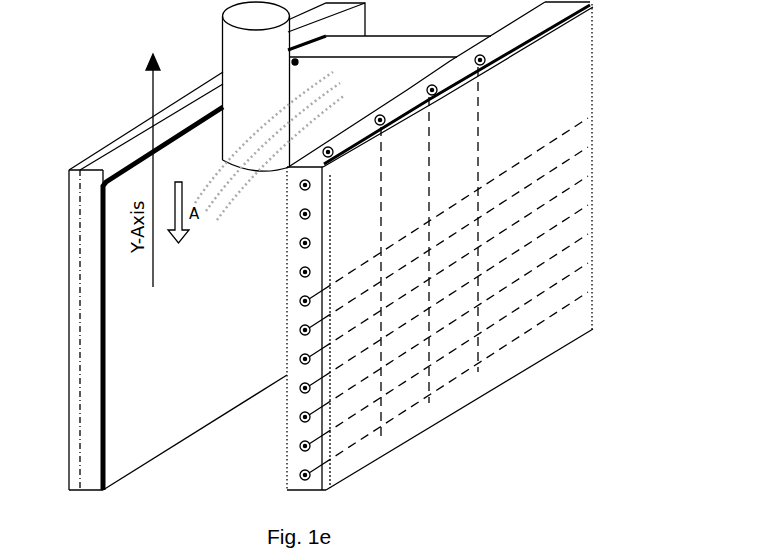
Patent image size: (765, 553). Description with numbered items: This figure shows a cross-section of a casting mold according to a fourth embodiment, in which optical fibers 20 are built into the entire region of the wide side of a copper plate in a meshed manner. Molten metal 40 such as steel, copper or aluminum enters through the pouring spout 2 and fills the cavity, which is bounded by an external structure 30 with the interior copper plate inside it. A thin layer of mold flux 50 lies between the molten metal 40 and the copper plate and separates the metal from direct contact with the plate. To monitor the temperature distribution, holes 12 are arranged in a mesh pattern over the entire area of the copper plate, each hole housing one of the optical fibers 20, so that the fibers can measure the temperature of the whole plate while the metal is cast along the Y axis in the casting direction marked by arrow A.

The pouring spout 2 is at (223, 50).
The holes 12 is at (310, 188).
The optical fibers 20 is at (311, 242).
The external structure 30 is at (580, 74).
The molten metal 40 is at (279, 140).
The mold flux 50 is at (143, 153).